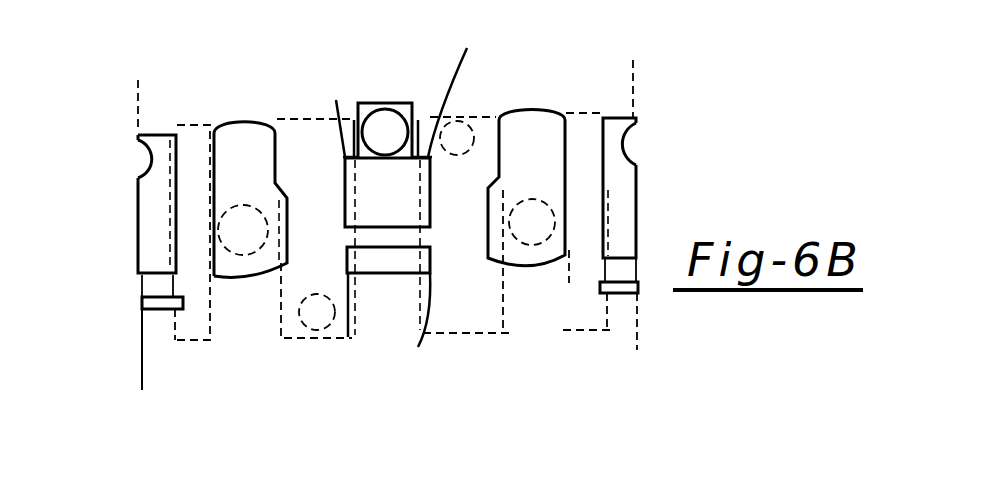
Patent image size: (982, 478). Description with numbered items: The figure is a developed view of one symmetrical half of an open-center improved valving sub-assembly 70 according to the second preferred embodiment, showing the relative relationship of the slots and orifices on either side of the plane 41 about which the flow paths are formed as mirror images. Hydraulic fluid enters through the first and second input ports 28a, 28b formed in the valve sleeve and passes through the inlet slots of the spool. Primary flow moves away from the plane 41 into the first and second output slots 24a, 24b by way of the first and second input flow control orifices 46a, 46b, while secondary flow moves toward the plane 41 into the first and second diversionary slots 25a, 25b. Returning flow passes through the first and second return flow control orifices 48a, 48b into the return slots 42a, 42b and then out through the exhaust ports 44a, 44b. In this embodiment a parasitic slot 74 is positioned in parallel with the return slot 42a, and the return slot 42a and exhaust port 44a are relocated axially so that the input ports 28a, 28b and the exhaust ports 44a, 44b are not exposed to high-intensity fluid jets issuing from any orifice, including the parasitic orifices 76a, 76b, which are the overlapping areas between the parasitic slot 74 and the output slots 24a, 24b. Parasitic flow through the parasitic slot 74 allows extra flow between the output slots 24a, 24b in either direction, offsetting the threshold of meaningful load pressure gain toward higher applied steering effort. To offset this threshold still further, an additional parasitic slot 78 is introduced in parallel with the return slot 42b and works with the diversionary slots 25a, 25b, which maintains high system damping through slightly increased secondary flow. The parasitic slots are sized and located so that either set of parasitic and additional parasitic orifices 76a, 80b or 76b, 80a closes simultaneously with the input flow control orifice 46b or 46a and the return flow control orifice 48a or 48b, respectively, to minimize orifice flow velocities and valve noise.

The open-center improved valving sub-assembly 70 is at (652, 100).
The plane 41 is at (142, 333).
The first return slot 42a is at (408, 103).
The second return slot 42b is at (160, 134).
The first exhaust port 44a is at (380, 127).
The second exhaust port 44b is at (152, 135).
The first input flow control orifice 46a is at (287, 263).
The second input flow control orifice 46b is at (500, 257).
The first return flow control orifice 48a is at (344, 203).
The second return flow control orifice 48b is at (458, 177).
The first output slot 24a is at (285, 120).
The second output slot 24b is at (460, 333).
The first diversionary slot 25a is at (217, 340).
The second diversionary slot 25b is at (568, 283).
The first input port 28a is at (320, 332).
The second input port 28b is at (473, 117).
The parasitic slot 74 is at (393, 273).
The first parasitic orifice 76a is at (347, 324).
The second parasitic orifice 76b is at (422, 324).
The additional parasitic slot 78 is at (160, 309).
The first additional parasitic orifice 80a is at (177, 309).
The second additional parasitic orifice 80b is at (595, 293).